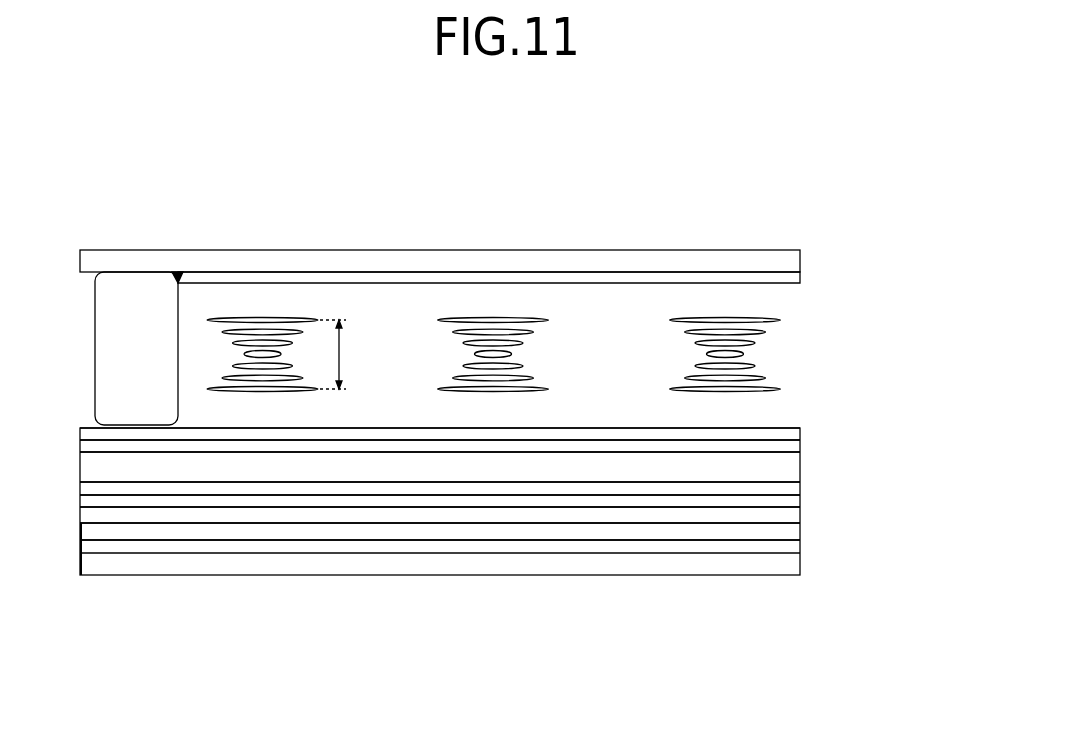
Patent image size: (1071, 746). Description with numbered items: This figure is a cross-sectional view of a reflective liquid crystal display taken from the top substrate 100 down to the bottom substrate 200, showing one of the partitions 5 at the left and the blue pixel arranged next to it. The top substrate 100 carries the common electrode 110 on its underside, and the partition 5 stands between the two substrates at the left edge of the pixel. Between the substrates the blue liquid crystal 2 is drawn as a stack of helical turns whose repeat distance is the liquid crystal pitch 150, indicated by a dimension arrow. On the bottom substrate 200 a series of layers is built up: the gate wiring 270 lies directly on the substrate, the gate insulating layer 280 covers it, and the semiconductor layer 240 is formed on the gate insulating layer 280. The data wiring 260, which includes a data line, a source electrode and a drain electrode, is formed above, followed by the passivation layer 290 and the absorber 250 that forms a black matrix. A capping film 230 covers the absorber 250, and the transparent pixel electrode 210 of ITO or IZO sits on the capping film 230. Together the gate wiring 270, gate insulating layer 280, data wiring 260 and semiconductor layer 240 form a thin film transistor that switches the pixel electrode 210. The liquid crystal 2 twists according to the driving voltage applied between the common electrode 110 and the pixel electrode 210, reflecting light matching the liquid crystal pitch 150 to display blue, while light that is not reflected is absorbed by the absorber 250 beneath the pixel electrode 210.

The liquid crystal 2 is at (397, 312).
The partition 5 is at (137, 298).
The top substrate 100 is at (760, 263).
The common electrode 110 is at (778, 281).
The liquid crystal pitch 150 is at (343, 353).
The bottom substrate 200 is at (483, 565).
The pixel electrode 210 is at (771, 434).
The capping film 230 is at (778, 448).
The semiconductor layer 240 is at (679, 515).
The absorber 250 is at (776, 468).
The data wiring 260 is at (768, 503).
The gate wiring 270 is at (550, 547).
The gate insulating layer 280 is at (625, 533).
The passivation layer 290 is at (778, 490).